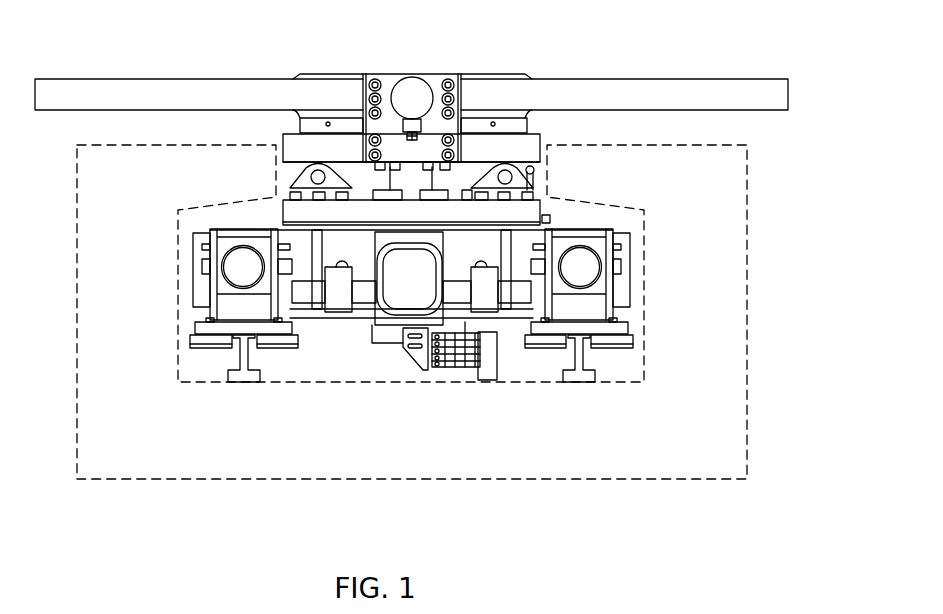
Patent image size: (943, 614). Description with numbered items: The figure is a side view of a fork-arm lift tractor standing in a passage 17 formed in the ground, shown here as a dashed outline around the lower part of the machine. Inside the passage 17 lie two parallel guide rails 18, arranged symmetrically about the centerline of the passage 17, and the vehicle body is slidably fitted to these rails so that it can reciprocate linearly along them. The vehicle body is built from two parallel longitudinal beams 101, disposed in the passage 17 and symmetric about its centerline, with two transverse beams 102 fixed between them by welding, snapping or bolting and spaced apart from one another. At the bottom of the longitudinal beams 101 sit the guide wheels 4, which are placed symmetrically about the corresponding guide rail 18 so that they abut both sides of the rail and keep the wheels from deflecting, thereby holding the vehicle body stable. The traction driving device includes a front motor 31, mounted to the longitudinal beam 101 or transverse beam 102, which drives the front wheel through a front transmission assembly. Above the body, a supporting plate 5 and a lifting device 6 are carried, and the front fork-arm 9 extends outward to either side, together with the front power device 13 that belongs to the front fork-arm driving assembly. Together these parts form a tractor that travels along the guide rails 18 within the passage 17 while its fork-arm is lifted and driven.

The front fork-arm 9 is at (138, 97).
The front power device 13 is at (410, 92).
The supporting plate 5 is at (497, 150).
The lifting device 6 is at (417, 183).
The passage 17 is at (200, 218).
The longitudinal beam 101 is at (212, 252).
The transverse beam 102 is at (298, 233).
The guide wheel 4 is at (190, 342).
The guide rail 18 is at (230, 357).
The front motor 31 is at (413, 287).